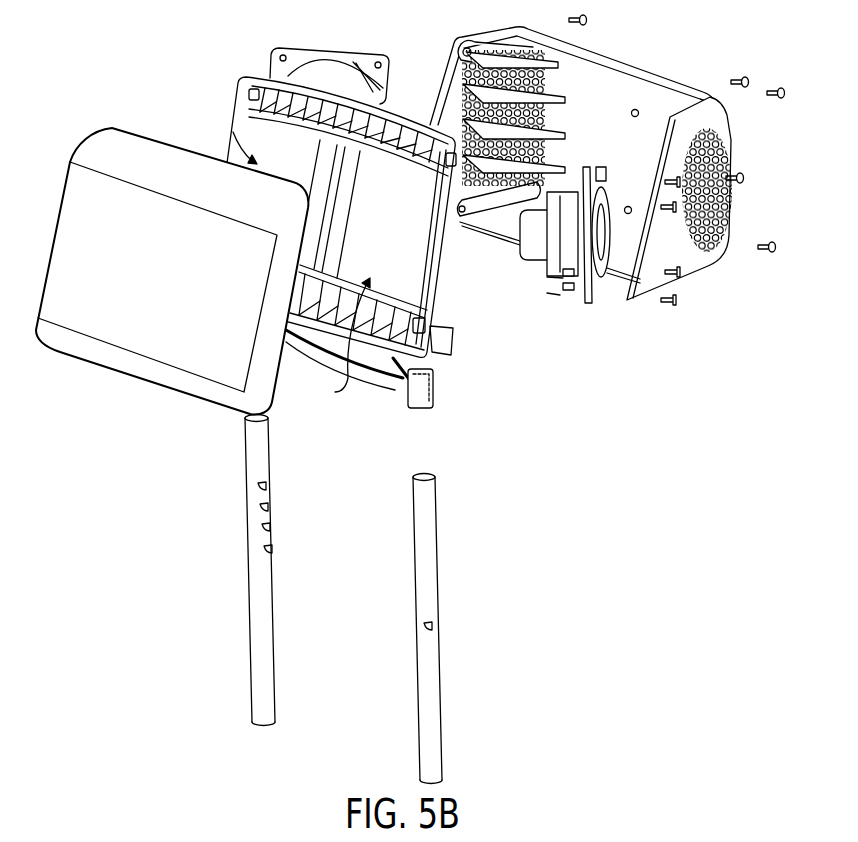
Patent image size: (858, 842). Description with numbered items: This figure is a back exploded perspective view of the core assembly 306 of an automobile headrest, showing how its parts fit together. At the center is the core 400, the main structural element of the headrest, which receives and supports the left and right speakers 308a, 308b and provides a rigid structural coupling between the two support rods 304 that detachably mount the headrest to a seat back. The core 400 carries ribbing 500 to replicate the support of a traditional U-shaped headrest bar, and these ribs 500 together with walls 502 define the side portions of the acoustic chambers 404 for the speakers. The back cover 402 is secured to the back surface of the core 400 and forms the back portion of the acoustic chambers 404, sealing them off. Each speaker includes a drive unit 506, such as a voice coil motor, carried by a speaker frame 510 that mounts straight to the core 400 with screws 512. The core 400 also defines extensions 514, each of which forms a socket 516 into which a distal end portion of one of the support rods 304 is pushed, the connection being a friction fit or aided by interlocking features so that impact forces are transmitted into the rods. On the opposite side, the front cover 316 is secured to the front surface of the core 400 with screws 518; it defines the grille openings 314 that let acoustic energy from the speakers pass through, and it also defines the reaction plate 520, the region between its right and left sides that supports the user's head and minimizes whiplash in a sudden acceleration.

The support rods 304 is at (243, 628).
The core assembly 306 is at (71, 84).
The left speaker 308a is at (262, 63).
The right speaker 308b is at (586, 314).
The grille openings 314 is at (459, 86).
The front cover 316 is at (640, 70).
The core 400 is at (318, 226).
The back cover 402 is at (80, 143).
The acoustic chambers 404 is at (233, 132).
The ribbing 500 is at (337, 180).
The walls 502 is at (443, 264).
The drive unit 506 is at (520, 250).
The speaker frame 510 is at (597, 290).
The screws 512 is at (680, 300).
The extensions 514 is at (434, 377).
The sockets 516 is at (434, 398).
The screws 518 is at (520, 88).
The reaction plate 520 is at (605, 116).